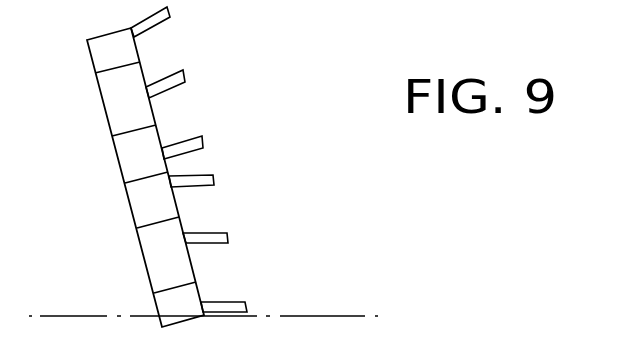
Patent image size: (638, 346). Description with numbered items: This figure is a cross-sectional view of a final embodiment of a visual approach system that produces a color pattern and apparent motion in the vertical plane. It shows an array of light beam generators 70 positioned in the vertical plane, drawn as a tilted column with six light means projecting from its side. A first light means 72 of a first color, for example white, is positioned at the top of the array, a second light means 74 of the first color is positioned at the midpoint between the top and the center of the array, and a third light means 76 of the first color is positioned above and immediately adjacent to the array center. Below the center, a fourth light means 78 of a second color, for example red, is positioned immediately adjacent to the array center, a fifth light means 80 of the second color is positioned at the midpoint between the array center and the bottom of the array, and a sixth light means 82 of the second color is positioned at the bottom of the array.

The array of light beam generators 70 is at (108, 172).
The first light means 72 is at (170, 17).
The second light means 74 is at (181, 82).
The third light means 76 is at (193, 139).
The fourth light means 78 is at (210, 186).
The fifth light means 80 is at (218, 243).
The sixth light means 82 is at (233, 302).